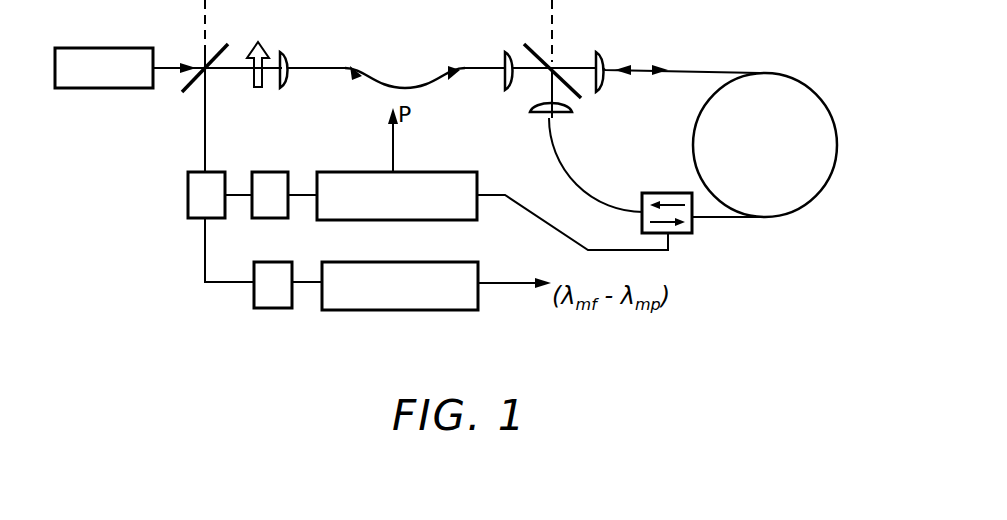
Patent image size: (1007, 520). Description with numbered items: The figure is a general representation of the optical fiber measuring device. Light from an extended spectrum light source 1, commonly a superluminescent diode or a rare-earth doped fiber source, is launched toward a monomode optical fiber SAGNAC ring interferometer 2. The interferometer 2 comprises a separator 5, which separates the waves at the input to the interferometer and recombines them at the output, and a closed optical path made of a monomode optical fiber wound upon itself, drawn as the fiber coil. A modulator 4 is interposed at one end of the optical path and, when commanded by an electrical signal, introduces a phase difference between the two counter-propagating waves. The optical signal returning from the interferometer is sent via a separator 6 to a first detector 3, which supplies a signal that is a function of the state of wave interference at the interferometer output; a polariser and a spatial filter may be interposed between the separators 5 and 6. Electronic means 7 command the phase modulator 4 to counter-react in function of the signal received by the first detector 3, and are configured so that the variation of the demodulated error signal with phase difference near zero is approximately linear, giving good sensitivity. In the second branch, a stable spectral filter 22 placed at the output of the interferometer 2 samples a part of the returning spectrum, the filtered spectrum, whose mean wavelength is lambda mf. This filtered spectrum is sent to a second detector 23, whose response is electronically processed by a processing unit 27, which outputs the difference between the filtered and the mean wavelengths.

The extended spectrum light source 1 is at (129, 56).
The monomode optical fiber SAGNAC ring interferometer 2 is at (662, 50).
The first detector 3 is at (268, 180).
The modulator 4 is at (680, 233).
The separator 5 is at (556, 56).
The separator 6 is at (215, 48).
The electronic means 7 is at (433, 179).
The stable spectral filter 22 is at (200, 180).
The second detector 23 is at (272, 300).
The processing unit 27 is at (408, 298).